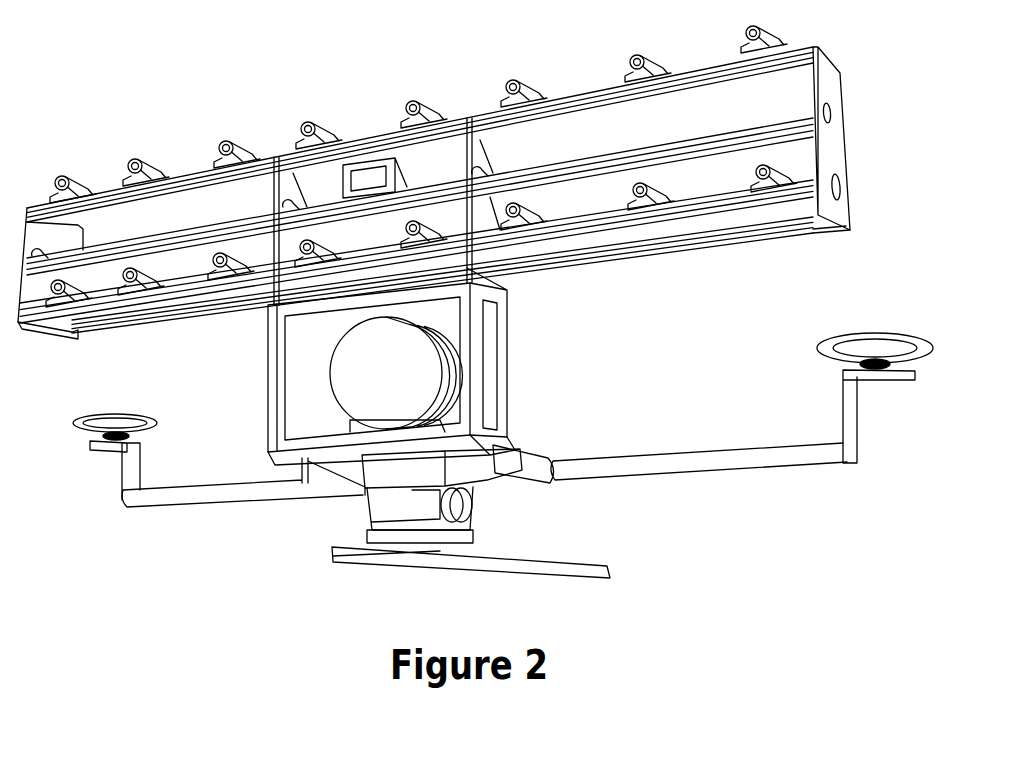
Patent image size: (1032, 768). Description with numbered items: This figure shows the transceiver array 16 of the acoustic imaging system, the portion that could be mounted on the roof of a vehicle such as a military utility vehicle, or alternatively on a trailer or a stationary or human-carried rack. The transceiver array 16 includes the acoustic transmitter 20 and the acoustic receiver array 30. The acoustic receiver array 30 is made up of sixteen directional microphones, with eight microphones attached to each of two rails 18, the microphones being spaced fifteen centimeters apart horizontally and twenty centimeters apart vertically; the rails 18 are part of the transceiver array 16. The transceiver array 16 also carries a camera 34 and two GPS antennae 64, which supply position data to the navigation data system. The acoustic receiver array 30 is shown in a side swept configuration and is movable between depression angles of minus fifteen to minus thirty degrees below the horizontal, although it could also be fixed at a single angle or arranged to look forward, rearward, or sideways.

The transceiver array 16 is at (565, 371).
The rails 18 is at (648, 253).
The acoustic transmitter 20 is at (348, 378).
The acoustic receiver array 30 is at (833, 77).
The camera 34 is at (394, 157).
The GPS antennae 64 is at (861, 346).